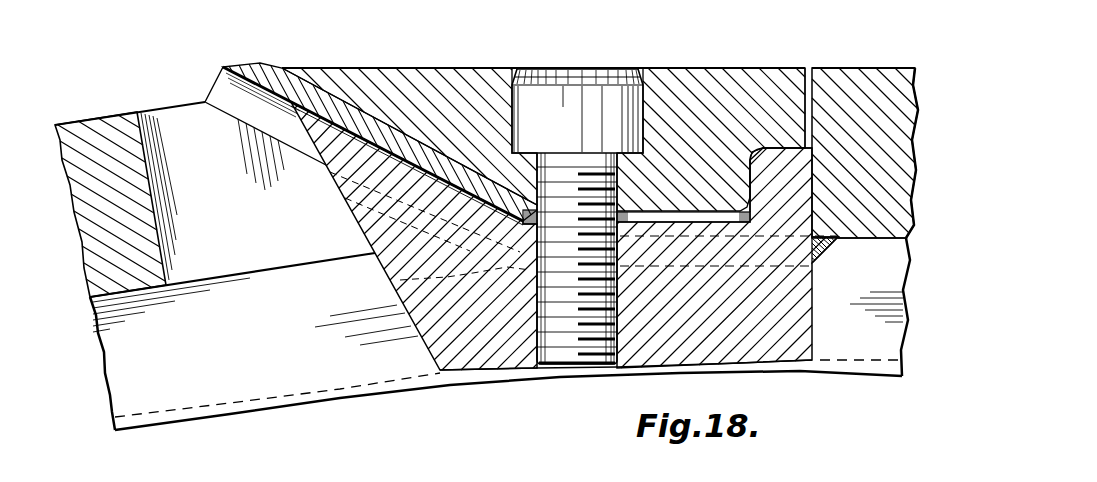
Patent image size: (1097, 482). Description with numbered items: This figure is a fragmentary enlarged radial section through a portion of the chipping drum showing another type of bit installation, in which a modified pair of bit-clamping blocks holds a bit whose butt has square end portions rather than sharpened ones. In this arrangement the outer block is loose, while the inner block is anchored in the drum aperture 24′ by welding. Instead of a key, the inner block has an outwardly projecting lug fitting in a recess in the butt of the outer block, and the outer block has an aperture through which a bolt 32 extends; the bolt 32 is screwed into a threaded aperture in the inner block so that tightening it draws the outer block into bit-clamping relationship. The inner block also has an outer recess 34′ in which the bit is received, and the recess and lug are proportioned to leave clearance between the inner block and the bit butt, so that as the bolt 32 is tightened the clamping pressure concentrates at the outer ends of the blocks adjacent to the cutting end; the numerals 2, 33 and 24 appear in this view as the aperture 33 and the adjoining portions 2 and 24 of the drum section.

The annular wall section 2 is at (102, 130).
The aperture 33 is at (617, 183).
The drum aperture 24′ is at (252, 255).
The bolt 32 is at (565, 342).
The outer recess 34′ is at (707, 218).
The lower ring member 24 is at (862, 345).